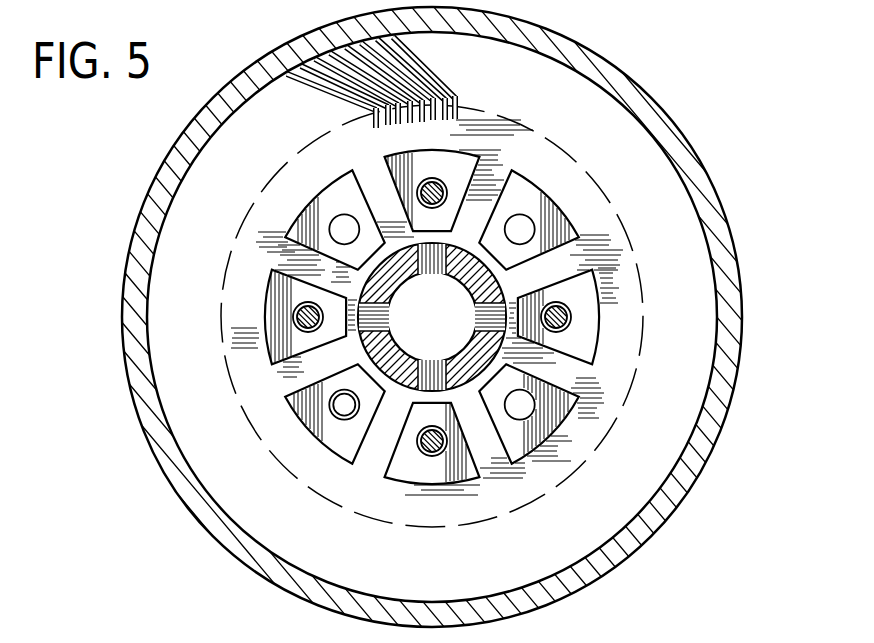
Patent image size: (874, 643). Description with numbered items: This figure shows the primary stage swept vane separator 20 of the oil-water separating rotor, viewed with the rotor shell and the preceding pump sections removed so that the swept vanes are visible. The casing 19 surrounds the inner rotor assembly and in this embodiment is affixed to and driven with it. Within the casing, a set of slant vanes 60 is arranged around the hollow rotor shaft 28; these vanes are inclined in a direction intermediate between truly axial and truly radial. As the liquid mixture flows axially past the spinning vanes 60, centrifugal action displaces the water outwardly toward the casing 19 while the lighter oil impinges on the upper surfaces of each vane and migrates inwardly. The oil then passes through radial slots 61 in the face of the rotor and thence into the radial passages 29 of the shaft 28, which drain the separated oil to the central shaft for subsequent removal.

The casing 19 is at (660, 122).
The primary stage swept vane separator 20 is at (301, 56).
The slant vanes 60 is at (432, 82).
The rotor shaft 28 is at (488, 283).
The radial passages 29 is at (440, 258).
The slots 61 is at (494, 188).